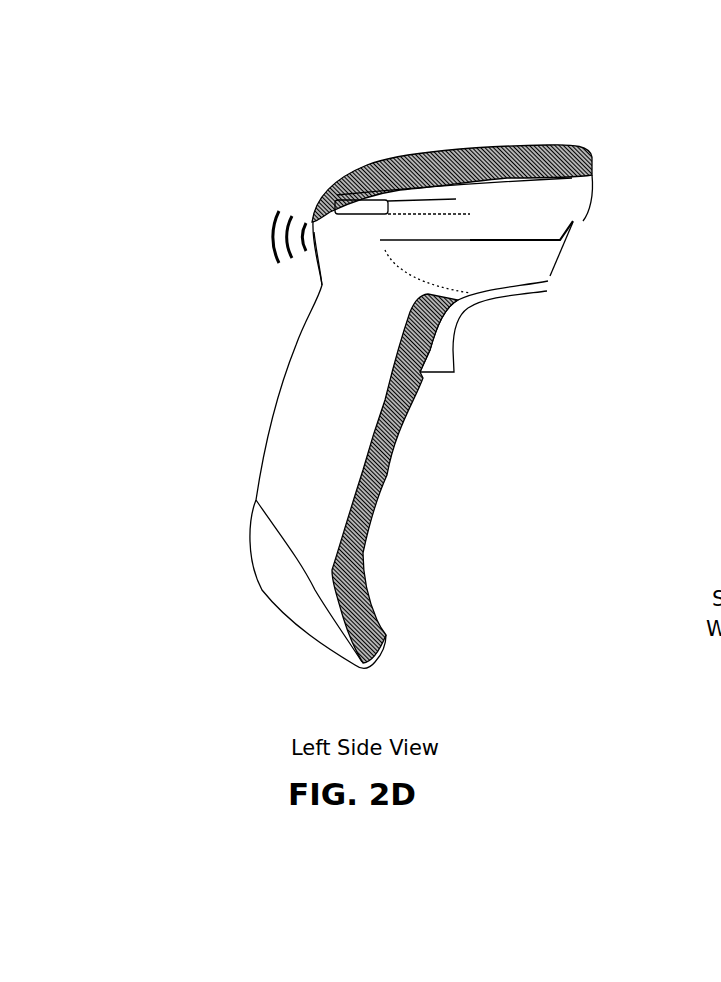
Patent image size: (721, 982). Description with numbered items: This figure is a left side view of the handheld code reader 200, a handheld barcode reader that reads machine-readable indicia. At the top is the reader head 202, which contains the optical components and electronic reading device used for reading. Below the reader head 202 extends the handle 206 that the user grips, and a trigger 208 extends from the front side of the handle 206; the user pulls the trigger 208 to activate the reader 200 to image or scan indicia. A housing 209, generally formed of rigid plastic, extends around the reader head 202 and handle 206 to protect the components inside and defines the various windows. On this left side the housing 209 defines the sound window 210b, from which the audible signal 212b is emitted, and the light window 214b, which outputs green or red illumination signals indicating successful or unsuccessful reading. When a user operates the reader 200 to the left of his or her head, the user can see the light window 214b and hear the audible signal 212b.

The handheld code reader 200 is at (482, 104).
The reader head 202 is at (380, 163).
The handle 206 is at (391, 477).
The trigger 208 is at (458, 374).
The housing 209 is at (568, 143).
The sound window 210b is at (330, 248).
The audible signal 212b is at (266, 220).
The light window 214b is at (362, 214).